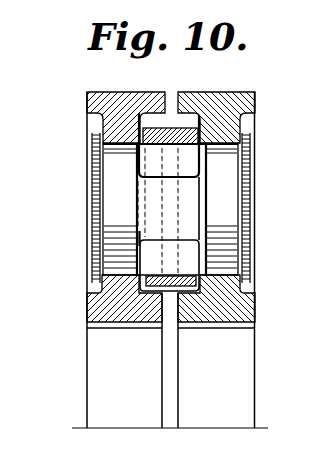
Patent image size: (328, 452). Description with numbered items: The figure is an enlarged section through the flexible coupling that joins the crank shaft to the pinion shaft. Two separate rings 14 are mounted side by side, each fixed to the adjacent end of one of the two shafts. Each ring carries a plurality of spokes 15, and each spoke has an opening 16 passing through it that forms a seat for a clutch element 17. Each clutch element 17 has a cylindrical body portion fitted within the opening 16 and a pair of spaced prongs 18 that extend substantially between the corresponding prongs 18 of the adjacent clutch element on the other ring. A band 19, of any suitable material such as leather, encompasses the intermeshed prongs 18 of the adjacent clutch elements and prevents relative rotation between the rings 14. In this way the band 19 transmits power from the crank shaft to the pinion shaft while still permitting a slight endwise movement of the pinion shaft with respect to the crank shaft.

The ring 14 is at (90, 312).
The spoke 15 is at (112, 127).
The opening 16 is at (112, 276).
The clutch element 17 is at (170, 209).
The prong 18 is at (194, 129).
The band 19 is at (154, 125).